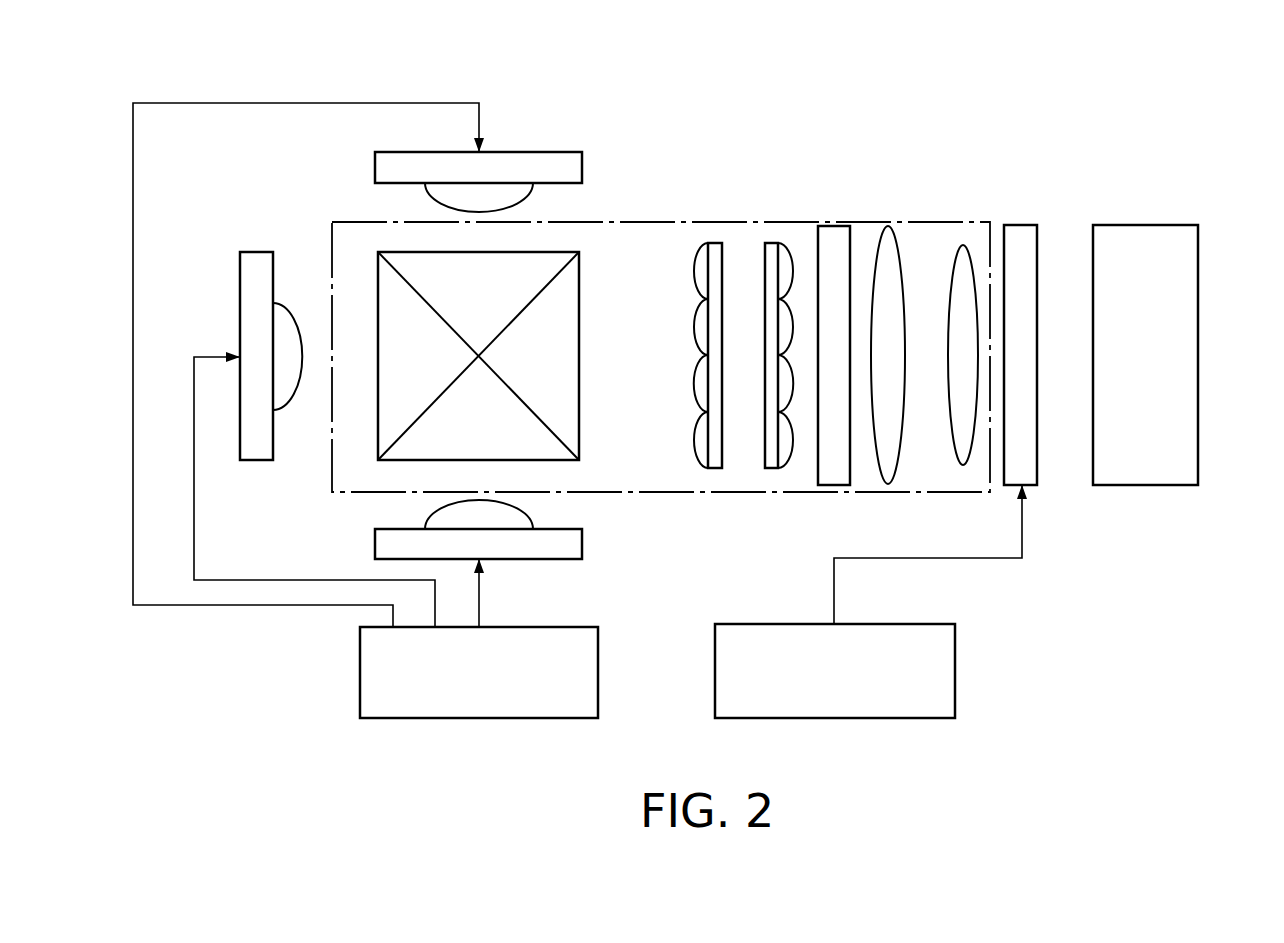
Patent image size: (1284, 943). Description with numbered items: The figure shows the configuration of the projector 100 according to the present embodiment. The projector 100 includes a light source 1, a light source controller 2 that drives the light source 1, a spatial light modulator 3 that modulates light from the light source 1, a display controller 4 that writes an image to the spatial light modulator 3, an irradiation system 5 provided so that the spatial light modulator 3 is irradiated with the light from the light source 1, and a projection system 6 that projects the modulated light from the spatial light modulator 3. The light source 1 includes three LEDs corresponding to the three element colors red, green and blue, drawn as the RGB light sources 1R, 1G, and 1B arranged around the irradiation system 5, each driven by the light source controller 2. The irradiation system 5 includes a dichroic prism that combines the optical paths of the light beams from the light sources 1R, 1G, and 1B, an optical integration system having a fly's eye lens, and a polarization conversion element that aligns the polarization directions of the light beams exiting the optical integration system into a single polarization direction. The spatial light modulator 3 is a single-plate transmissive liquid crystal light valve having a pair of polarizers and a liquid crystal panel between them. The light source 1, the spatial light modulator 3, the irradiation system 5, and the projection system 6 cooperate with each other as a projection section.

The projector 100 is at (1220, 117).
The light source 1 is at (449, 345).
The red light source 1R is at (582, 163).
The green light source 1G is at (255, 252).
The blue light source 1B is at (582, 547).
The light source controller 2 is at (540, 627).
The spatial light modulator 3 is at (1020, 225).
The display controller 4 is at (900, 624).
The irradiation system 5 is at (930, 220).
The projection system 6 is at (1143, 225).